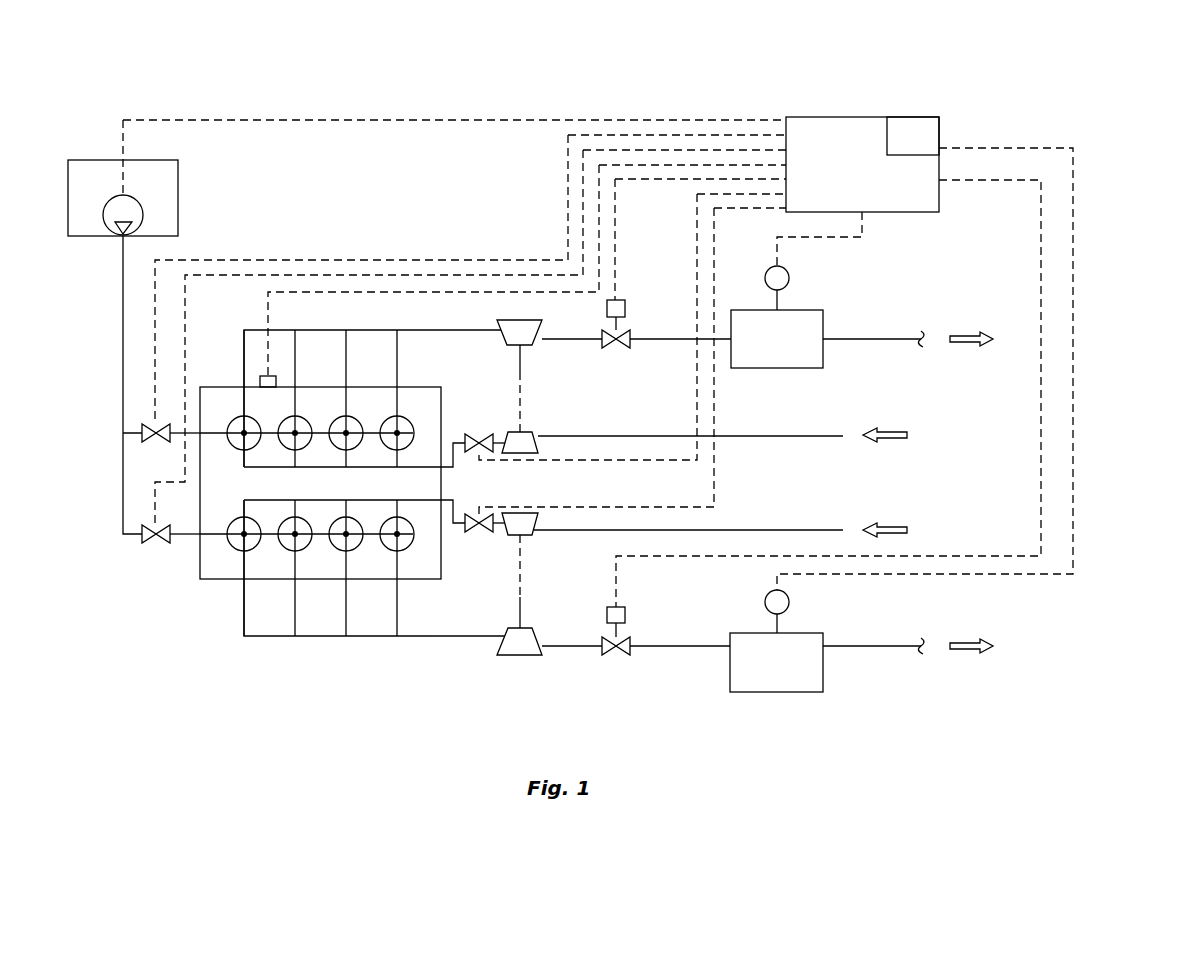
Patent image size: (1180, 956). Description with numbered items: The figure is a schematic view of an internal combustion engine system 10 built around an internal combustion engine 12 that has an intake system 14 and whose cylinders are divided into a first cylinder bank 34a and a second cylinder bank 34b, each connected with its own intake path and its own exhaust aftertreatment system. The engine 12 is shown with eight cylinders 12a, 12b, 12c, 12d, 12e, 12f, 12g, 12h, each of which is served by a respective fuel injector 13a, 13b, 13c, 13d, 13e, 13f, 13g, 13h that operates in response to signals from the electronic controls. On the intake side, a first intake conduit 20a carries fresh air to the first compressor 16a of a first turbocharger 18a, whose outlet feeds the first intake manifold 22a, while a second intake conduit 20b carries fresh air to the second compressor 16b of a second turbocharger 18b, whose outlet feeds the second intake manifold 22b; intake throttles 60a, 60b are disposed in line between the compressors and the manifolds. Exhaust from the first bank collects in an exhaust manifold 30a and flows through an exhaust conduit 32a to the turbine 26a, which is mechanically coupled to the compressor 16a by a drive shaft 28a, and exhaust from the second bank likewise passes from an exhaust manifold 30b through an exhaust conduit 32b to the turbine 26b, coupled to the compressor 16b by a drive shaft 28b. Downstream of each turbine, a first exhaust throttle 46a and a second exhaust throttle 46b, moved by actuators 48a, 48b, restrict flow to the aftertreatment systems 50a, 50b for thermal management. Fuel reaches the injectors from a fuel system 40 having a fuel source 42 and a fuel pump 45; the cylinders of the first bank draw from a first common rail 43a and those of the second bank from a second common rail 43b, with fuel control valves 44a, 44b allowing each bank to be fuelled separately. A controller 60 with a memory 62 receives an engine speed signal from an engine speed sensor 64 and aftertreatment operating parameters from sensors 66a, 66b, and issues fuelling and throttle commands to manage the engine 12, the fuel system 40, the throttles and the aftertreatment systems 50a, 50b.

The internal combustion engine system 10 is at (1105, 340).
The internal combustion engine 12 is at (181, 565).
The cylinder 12a is at (229, 431).
The cylinder 12b is at (297, 414).
The cylinder 12c is at (348, 414).
The cylinder 12d is at (415, 437).
The cylinder 12e is at (233, 552).
The cylinder 12f is at (278, 552).
The cylinder 12g is at (347, 551).
The cylinder 12h is at (408, 551).
The fuel injector 13a is at (241, 424).
The fuel injector 13b is at (292, 426).
The fuel injector 13c is at (343, 425).
The fuel injector 13d is at (394, 425).
The fuel injector 13e is at (242, 530).
The fuel injector 13f is at (293, 525).
The fuel injector 13g is at (345, 525).
The fuel injector 13h is at (395, 525).
The intake system 14 is at (528, 486).
The first compressor 16a is at (525, 432).
The second compressor 16b is at (533, 534).
The first turbocharger 18a is at (548, 389).
The second turbocharger 18b is at (541, 602).
The first intake conduit 20a is at (777, 438).
The second intake conduit 20b is at (817, 528).
The first intake manifold 22a is at (382, 468).
The second intake manifold 22b is at (432, 501).
The first turbine 26a is at (505, 340).
The second turbine 26b is at (532, 656).
The drive shaft 28a is at (522, 372).
The drive shaft 28b is at (517, 588).
The first exhaust manifold 30a is at (295, 330).
The second exhaust manifold 30b is at (253, 637).
The first exhaust conduit 32a is at (475, 330).
The second exhaust conduit 32b is at (433, 637).
The first cylinder bank 34a is at (420, 403).
The second cylinder bank 34b is at (318, 565).
The fuel system 40 is at (57, 82).
The fuel source 42 is at (178, 176).
The first common rail 43a is at (193, 433).
The second common rail 43b is at (178, 537).
The fuel control valve 44a is at (142, 443).
The fuel control valve 44b is at (142, 543).
The fuel pump 45 is at (103, 214).
The first exhaust throttle 46a is at (630, 336).
The second exhaust throttle 46b is at (626, 655).
The actuator 48a is at (627, 300).
The actuator 48b is at (625, 615).
The aftertreatment system 50a is at (845, 370).
The aftertreatment system 50b is at (845, 695).
The controller 60 is at (875, 198).
The intake throttle 60a is at (480, 436).
The intake throttle 60b is at (480, 531).
The memory 62 is at (928, 133).
The engine speed sensor 64 is at (265, 373).
The sensor 66a is at (789, 282).
The sensor 66b is at (789, 608).